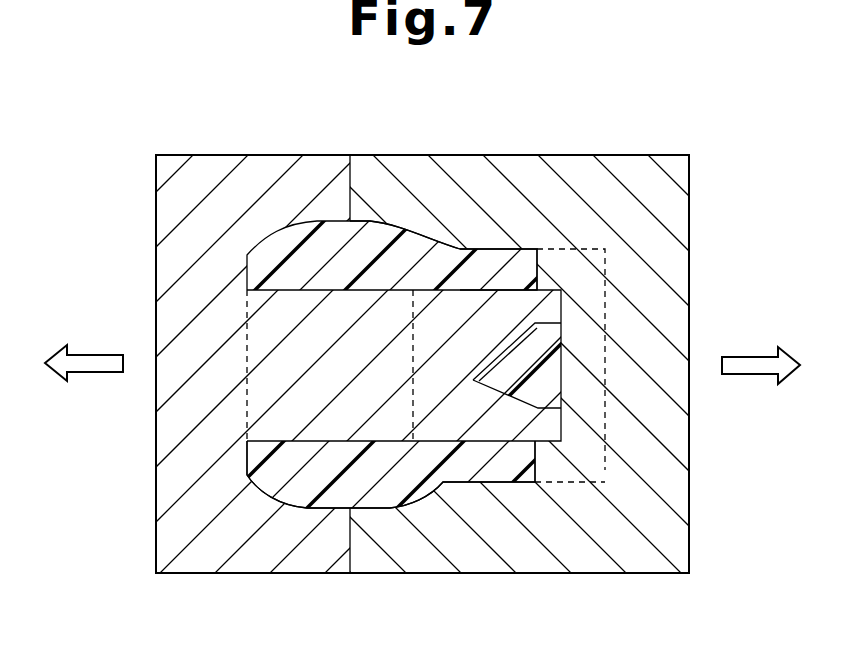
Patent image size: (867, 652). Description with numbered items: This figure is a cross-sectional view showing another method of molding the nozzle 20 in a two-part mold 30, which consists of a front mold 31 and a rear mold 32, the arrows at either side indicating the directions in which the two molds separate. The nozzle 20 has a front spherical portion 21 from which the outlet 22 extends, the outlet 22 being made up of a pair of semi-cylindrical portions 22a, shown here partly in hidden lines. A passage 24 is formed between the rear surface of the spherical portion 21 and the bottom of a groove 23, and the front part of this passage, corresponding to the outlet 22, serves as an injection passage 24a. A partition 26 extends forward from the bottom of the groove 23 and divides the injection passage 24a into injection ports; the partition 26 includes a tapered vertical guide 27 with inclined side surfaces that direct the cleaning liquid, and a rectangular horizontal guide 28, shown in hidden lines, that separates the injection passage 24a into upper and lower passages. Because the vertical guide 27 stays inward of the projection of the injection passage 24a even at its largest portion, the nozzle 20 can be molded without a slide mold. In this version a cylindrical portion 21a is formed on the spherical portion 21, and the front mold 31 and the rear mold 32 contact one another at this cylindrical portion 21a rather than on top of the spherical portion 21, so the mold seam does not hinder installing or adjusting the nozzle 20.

The nozzle 20 is at (387, 525).
The spherical portion 21 is at (277, 503).
The cylindrical portion 21a is at (372, 222).
The outlet 22 is at (495, 472).
The semi-cylindrical portions 22a is at (605, 470).
The groove 23 is at (545, 470).
The passage 24 is at (268, 441).
The injection passage 24a is at (489, 296).
The partition 26 is at (572, 400).
The vertical guide 27 is at (550, 366).
The horizontal guide 28 is at (413, 352).
The two-part mold 30 is at (290, 111).
The front mold 31 is at (413, 142).
The rear mold 32 is at (270, 144).